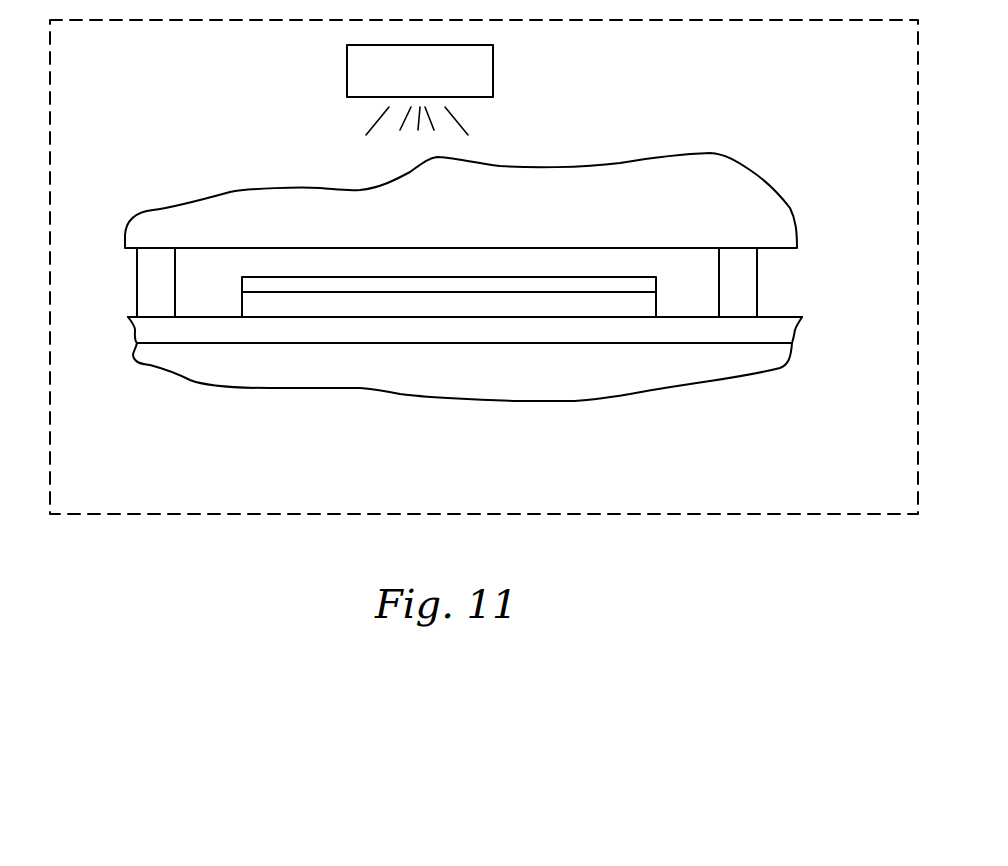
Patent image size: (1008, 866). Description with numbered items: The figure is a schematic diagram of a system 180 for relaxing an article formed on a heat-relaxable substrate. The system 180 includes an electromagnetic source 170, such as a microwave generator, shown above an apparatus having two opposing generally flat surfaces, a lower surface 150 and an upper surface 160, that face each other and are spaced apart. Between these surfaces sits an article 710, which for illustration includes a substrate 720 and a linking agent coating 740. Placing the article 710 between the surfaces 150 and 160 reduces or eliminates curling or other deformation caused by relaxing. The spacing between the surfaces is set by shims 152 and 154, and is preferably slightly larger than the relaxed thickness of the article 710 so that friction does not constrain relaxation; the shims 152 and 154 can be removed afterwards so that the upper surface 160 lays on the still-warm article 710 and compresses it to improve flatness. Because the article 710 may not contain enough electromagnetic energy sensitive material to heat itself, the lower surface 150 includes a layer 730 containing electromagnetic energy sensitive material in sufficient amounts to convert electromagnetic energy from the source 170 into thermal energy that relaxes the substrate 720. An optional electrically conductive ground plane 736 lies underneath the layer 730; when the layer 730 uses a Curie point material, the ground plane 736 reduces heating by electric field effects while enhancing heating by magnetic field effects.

The lower surface 150 is at (205, 317).
The shim 152 is at (148, 272).
The shim 154 is at (748, 272).
The upper surface 160 is at (203, 248).
The electromagnetic source 170 is at (483, 67).
The system 180 is at (788, 514).
The article 710 is at (670, 288).
The substrate 720 is at (561, 302).
The layer 730 is at (788, 330).
The electrically conductive ground plane 736 is at (788, 357).
The linking agent coating 740 is at (594, 283).